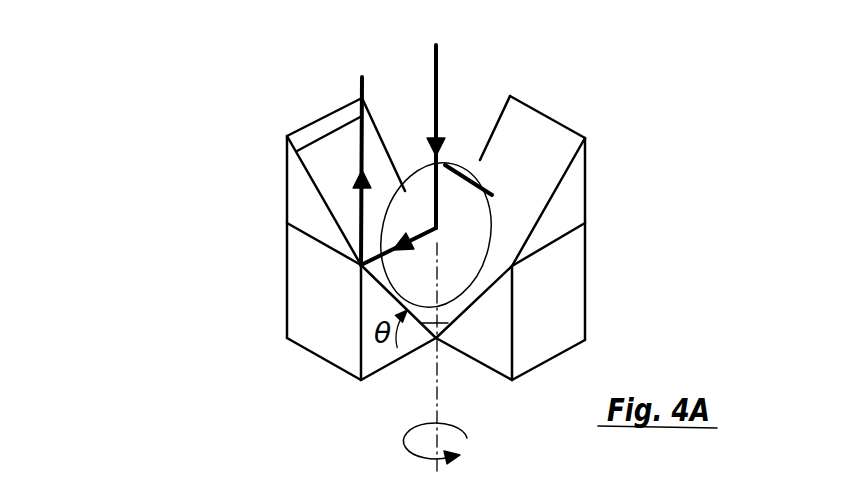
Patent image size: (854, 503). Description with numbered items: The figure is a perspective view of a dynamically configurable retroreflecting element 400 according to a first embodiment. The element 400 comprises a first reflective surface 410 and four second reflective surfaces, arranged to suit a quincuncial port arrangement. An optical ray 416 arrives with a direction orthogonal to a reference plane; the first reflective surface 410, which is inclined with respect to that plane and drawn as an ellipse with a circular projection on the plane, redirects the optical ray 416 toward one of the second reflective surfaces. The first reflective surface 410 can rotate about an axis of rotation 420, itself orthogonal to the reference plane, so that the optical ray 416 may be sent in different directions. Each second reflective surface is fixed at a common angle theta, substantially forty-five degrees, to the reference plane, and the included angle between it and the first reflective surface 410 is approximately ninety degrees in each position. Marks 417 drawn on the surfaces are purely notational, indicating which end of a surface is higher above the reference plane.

The dynamically configurable retroreflecting element 400 is at (414, 228).
The first reflective surface 410 is at (463, 162).
The optical ray 416 is at (437, 72).
The marks 417 is at (338, 128).
The axis of rotation 420 is at (437, 393).